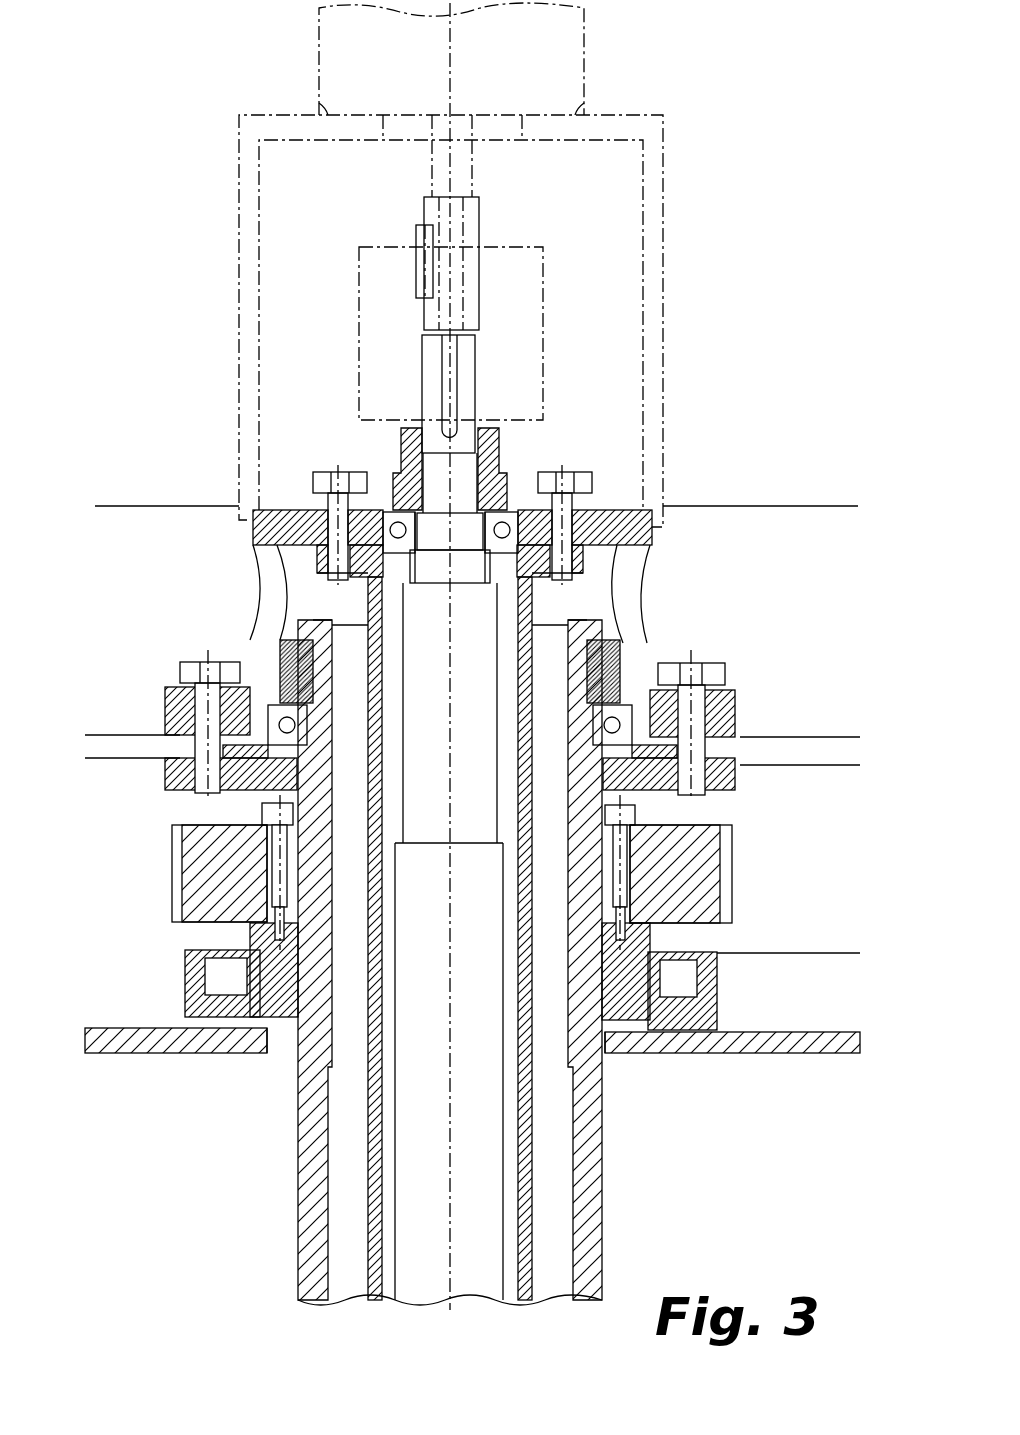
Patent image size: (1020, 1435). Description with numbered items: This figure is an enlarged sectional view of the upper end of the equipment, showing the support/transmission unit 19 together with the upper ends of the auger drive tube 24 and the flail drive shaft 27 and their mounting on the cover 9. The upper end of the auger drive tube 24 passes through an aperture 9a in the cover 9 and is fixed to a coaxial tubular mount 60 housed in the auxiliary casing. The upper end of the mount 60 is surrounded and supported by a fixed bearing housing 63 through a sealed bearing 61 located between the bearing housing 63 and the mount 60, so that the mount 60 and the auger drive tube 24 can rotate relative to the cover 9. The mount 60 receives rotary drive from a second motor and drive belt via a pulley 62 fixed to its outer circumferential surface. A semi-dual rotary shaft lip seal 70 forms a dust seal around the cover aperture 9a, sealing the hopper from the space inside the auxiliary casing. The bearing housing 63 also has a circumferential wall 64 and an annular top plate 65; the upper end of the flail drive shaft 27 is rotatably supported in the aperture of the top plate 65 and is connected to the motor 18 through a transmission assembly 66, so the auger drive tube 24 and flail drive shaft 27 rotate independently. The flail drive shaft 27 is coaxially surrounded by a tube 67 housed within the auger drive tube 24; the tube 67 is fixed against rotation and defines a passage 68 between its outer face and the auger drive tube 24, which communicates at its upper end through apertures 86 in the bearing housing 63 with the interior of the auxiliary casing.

The motor 18 is at (588, 75).
The support/transmission unit 19 is at (707, 527).
The transmission assembly 66 is at (359, 262).
The annular top plate 65 is at (280, 520).
The bearing housing 63 is at (250, 558).
The apertures 86 is at (267, 580).
The circumferential wall 64 is at (257, 647).
The sealed bearing 61 is at (640, 660).
The pulley 62 is at (705, 882).
The tubular mount 60 is at (585, 800).
The semi-dual rotary shaft lip seal 70 is at (205, 950).
The aperture 9a is at (285, 1075).
The cover 9 is at (793, 1045).
The passage 68 is at (558, 1160).
The auger drive tube 24 is at (602, 1197).
The tube 67 is at (355, 1225).
The flail drive shaft 27 is at (485, 1247).